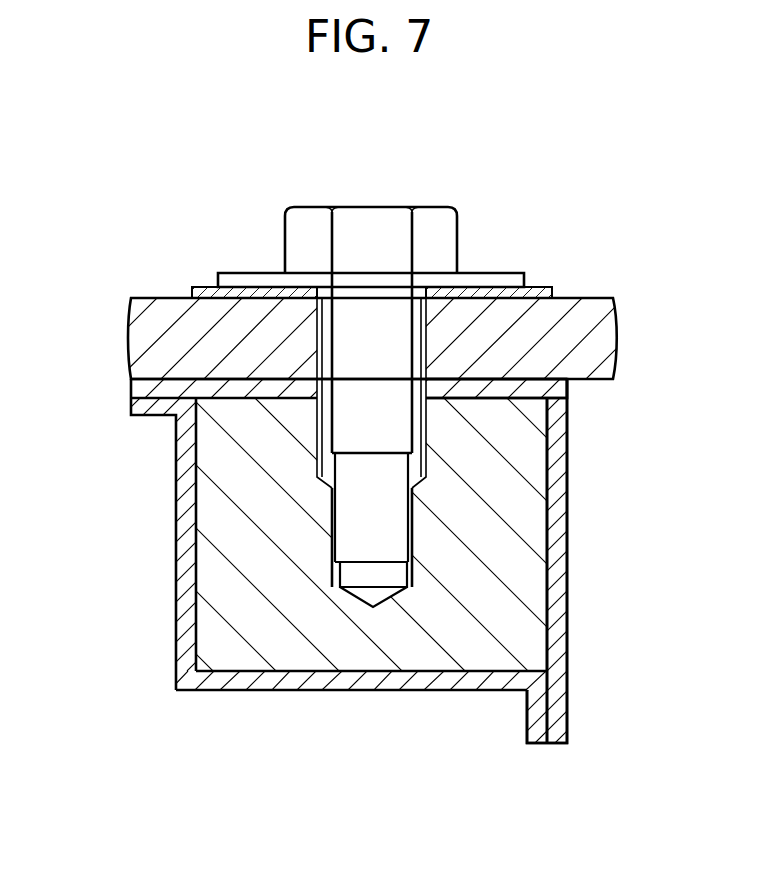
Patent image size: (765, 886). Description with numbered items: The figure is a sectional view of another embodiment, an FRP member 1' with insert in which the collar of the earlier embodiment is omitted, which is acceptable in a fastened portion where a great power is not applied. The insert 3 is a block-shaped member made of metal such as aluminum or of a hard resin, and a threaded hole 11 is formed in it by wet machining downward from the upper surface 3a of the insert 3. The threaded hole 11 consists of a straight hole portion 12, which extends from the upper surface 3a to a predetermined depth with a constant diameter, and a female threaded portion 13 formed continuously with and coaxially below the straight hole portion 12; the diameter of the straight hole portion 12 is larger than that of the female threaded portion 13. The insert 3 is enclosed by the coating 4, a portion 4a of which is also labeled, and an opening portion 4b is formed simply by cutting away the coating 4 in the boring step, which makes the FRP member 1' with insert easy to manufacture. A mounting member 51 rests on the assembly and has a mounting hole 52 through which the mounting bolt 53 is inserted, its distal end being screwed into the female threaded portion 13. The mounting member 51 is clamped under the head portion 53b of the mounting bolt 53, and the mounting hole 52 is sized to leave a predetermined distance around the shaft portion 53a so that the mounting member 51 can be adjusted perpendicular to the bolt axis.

The FRP member with insert 1' is at (589, 561).
The insert 3 is at (580, 413).
The upper surface of the insert 3a is at (518, 383).
The coating 4 is at (130, 388).
The flange portion of nut member 4a is at (163, 377).
The opening portion 4b is at (419, 396).
The threaded hole 11 is at (496, 530).
The straight hole portion 12 is at (420, 463).
The female threaded portion 13 is at (410, 567).
The mounting member 51 is at (132, 313).
The mounting hole 52 is at (208, 290).
The mounting bolt 53 is at (448, 377).
The shaft portion of the mounting bolt 53a is at (398, 342).
The head portion of the mounting bolt 53b is at (457, 243).